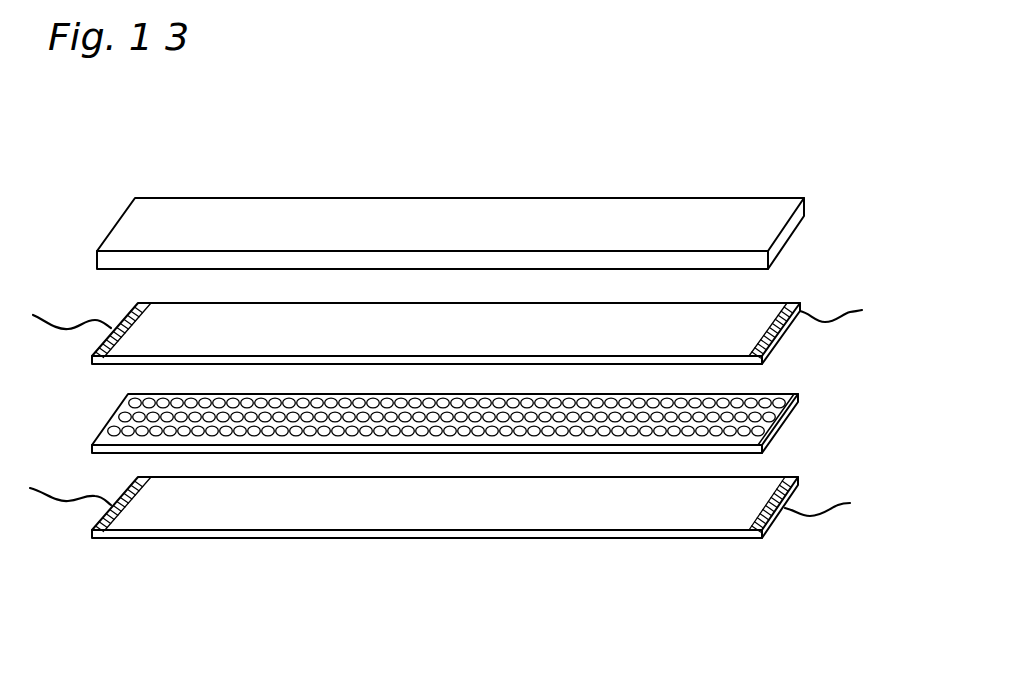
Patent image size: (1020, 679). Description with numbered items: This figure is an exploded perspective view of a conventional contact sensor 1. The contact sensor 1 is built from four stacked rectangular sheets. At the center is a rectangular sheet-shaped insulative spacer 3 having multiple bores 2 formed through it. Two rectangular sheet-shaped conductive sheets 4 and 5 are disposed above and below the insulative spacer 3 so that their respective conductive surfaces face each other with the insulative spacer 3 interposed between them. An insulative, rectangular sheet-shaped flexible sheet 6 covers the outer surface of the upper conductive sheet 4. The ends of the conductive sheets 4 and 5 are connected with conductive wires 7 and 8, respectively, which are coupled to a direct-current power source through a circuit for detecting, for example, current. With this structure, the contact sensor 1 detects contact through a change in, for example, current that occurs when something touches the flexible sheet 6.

The contact sensor 1 is at (176, 172).
The bores 2 is at (665, 395).
The insulative spacer 3 is at (471, 406).
The conductive sheet 4 is at (464, 307).
The conductive sheet 5 is at (453, 514).
The flexible sheet 6 is at (598, 213).
The conductive wire 7 is at (68, 328).
The conductive wire 8 is at (66, 501).